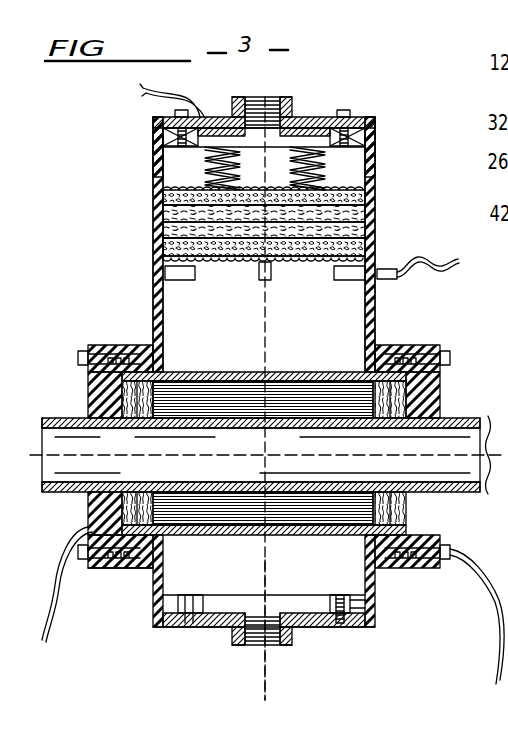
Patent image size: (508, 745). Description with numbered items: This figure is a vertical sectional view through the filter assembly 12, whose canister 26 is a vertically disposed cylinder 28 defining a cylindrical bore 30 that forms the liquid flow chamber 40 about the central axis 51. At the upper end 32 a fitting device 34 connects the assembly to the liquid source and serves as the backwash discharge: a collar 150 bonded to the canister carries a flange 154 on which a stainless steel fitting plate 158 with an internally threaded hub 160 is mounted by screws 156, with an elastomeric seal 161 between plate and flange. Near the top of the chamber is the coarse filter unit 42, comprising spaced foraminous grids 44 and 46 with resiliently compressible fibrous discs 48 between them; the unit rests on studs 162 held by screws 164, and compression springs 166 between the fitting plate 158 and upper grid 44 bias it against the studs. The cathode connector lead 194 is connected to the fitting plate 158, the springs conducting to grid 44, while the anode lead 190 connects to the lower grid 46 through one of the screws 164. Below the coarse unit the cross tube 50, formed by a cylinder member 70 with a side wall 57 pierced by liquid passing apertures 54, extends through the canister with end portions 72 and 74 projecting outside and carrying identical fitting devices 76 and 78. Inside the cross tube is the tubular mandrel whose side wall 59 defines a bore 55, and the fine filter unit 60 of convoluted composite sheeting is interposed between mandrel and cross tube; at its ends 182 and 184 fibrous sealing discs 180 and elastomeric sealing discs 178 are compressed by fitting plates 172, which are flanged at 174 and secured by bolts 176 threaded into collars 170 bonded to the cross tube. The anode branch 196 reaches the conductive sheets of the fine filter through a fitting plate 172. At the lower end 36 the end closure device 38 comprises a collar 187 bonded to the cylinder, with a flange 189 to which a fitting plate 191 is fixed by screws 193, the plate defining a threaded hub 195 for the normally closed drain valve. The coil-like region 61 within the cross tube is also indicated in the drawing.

The filter assembly 12 is at (381, 90).
The canister 26 is at (378, 136).
The cylinder 28 is at (373, 190).
The cylindrical bore 30 is at (157, 165).
The upper end 32 is at (153, 126).
The fitting device 34 is at (323, 87).
The lower end 36 is at (377, 616).
The end closure device 38 is at (208, 635).
The liquid flow chamber 40 is at (187, 308).
The coarse filter unit 42 is at (153, 227).
The foraminous grid 44 is at (175, 197).
The foraminous grid 46 is at (301, 262).
The discs 48 is at (350, 236).
The cross tube 50 is at (342, 362).
The central axis 51 is at (268, 674).
The liquid passing apertures 54 is at (235, 372).
The bore 55 is at (403, 464).
The side wall 57 is at (215, 372).
The side wall 59 is at (220, 477).
The fine filter unit 60 is at (277, 400).
The lower coil winding 61 is at (218, 508).
The cylinder member 70 is at (310, 372).
The end portion 72 is at (148, 363).
The end portion 74 is at (390, 353).
The fitting device 76 is at (87, 593).
The fitting device 78 is at (462, 374).
The collar 150 is at (352, 118).
The flange 154 is at (330, 145).
The screws 156 is at (176, 113).
The fitting plate 158 is at (303, 117).
The internally threaded hub 160 is at (284, 97).
The elastomeric seal 161 is at (348, 128).
The studs 162 is at (167, 280).
The screws 164 is at (154, 264).
The compression springs 166 is at (235, 154).
The collar 170 is at (140, 566).
The fitting plates 172 is at (92, 498).
The flange 174 is at (108, 569).
The securement bolts 176 is at (440, 348).
The elastomeric sealing discs 178 is at (122, 397).
The sealing fibrous discs 180 is at (120, 409).
The end 182 is at (141, 427).
The end 184 is at (383, 426).
The collar 187 is at (358, 623).
The flange 189 is at (337, 595).
The anode lead 190 is at (432, 258).
The fitting plate 191 is at (293, 613).
The screws 193 is at (345, 625).
The cathode connector lead 194 is at (197, 107).
The internally threaded hub 195 is at (236, 648).
The branch 196 is at (64, 598).